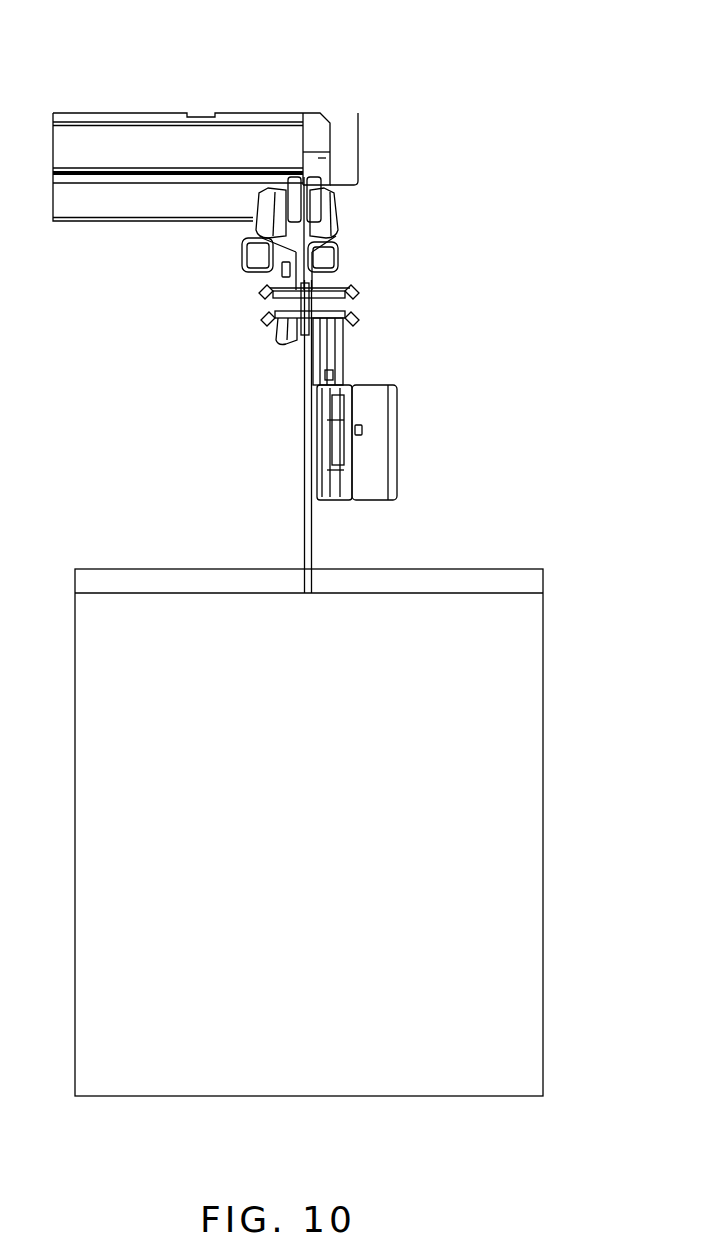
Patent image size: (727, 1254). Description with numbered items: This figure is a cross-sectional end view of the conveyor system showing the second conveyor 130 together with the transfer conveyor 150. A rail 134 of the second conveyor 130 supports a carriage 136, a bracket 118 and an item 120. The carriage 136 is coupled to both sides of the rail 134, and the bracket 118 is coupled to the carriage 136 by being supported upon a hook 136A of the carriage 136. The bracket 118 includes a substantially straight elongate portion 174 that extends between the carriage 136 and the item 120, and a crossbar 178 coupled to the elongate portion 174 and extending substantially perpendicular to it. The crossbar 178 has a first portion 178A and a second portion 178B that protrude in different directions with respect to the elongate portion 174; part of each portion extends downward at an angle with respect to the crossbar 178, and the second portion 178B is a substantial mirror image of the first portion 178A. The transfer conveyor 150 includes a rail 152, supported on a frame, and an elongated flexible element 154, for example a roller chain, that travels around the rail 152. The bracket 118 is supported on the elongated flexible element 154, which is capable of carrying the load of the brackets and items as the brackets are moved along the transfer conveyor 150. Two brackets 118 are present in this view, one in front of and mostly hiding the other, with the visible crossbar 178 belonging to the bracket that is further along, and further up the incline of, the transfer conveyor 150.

The second conveyor 130 is at (314, 61).
The rail 134 is at (88, 204).
The carriage 136 is at (363, 213).
The hook 136A is at (277, 334).
The bracket 118 is at (224, 413).
The elongate portion 174 is at (305, 452).
The crossbar 178 is at (362, 277).
The first portion 178A is at (262, 320).
The second portion 178B is at (357, 326).
The transfer conveyor 150 is at (416, 384).
The rail 152 is at (380, 500).
The elongated flexible element 154 is at (343, 360).
The item 120 is at (531, 798).